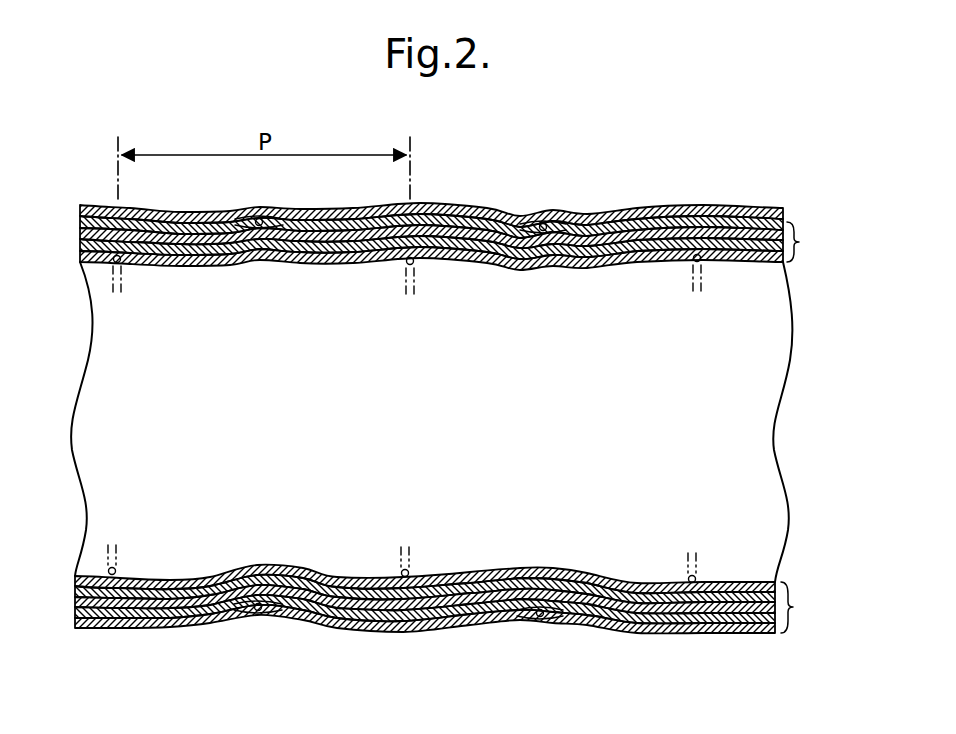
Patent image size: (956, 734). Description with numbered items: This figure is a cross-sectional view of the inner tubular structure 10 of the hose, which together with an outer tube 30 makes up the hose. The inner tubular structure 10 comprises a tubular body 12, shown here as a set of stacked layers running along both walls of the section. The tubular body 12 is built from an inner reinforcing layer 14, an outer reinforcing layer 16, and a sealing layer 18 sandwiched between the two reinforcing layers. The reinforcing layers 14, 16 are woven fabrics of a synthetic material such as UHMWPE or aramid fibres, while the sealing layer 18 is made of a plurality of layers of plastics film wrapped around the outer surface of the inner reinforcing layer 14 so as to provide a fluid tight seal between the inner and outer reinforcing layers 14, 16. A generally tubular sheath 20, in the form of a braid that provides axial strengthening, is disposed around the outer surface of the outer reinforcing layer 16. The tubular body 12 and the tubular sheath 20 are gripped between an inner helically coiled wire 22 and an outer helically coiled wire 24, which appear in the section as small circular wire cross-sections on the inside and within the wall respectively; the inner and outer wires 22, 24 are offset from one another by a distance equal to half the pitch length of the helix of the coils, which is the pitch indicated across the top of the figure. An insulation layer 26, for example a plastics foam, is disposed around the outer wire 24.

The inner tubular structure 10 is at (804, 193).
The tubular body 12 is at (805, 427).
The inner reinforcing layer 14 is at (148, 264).
The outer reinforcing layer 16 is at (521, 264).
The sealing layer 18 is at (337, 264).
The tubular sheath 20 is at (637, 213).
The inner helically coiled wire 22 is at (114, 260).
The outer helically coiled wire 24 is at (262, 225).
The insulation layer 26 is at (203, 212).
The outer tube 30 is at (443, 207).